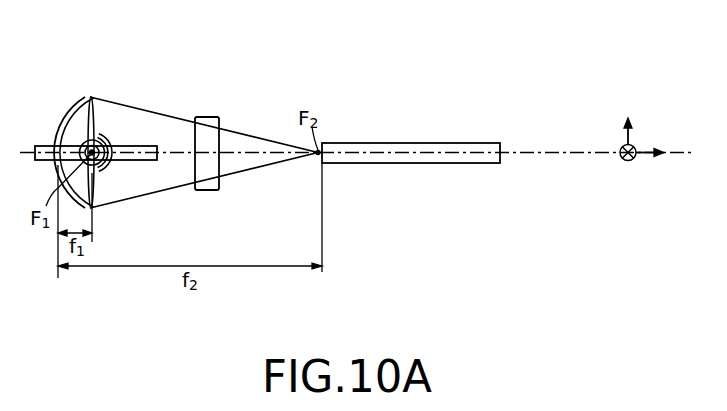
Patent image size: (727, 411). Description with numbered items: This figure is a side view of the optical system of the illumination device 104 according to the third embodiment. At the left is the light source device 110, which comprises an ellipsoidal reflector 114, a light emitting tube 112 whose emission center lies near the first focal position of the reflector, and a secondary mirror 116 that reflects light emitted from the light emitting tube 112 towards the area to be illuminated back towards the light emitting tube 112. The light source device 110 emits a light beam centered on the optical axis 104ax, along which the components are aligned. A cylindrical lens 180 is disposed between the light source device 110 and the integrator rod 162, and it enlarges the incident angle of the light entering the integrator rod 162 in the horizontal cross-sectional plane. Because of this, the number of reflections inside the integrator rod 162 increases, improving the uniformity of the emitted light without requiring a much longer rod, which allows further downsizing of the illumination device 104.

The illumination device 104 is at (562, 36).
The optical axis of illumination device 104ax is at (550, 152).
The light source device 110 is at (182, 56).
The light emitting tube 112 is at (93, 140).
The ellipsoidal reflector 114 is at (75, 103).
The secondary mirror 116 is at (111, 134).
The integrator rod 162 is at (435, 143).
The cylindrical lens 180 is at (205, 117).